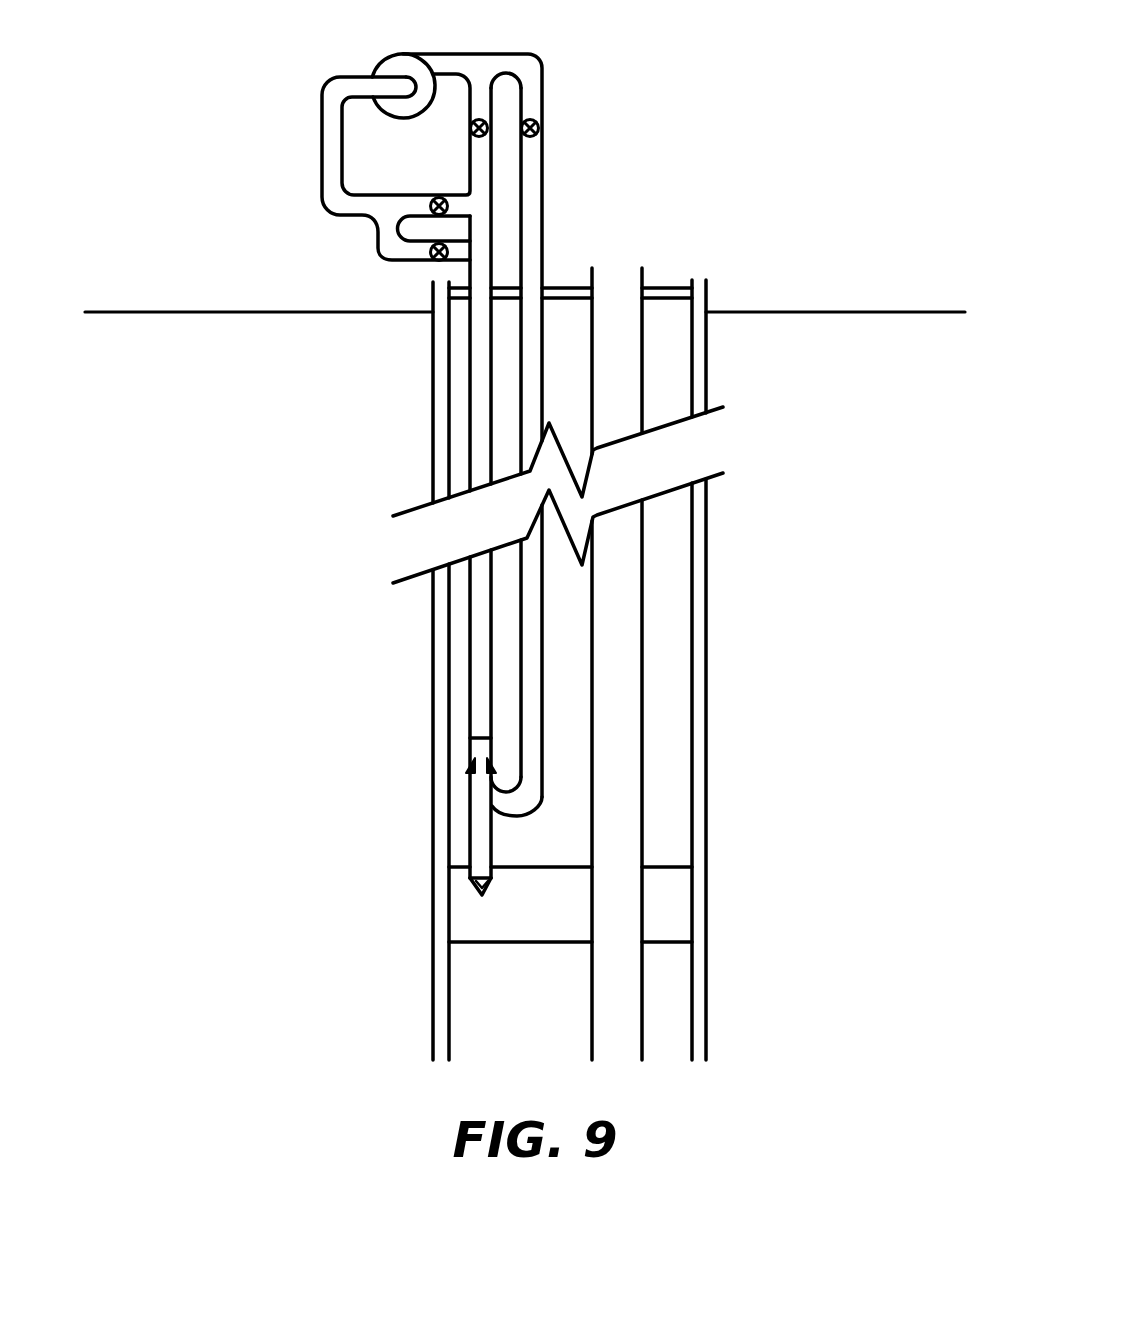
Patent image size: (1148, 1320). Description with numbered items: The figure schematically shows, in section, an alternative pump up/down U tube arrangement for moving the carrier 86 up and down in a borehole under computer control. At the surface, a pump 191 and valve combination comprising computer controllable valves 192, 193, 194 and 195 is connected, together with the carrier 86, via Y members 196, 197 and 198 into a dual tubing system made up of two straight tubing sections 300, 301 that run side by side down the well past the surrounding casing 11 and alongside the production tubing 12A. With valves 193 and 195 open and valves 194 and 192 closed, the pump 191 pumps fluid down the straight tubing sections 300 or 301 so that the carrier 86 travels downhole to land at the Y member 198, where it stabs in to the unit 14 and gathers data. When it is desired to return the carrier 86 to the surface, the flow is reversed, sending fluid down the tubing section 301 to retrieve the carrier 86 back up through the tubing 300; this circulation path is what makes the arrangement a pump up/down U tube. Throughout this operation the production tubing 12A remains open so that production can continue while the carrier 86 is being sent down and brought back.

The well casing 11 is at (707, 368).
The production tubing 12A is at (643, 545).
The unit 14 is at (685, 898).
The carrier 86 is at (478, 845).
The pump 191 is at (405, 54).
The computer controllable valve 192 is at (539, 128).
The computer controllable valve 193 is at (470, 128).
The computer controllable valve 194 is at (433, 197).
The computer controllable valve 195 is at (439, 260).
The Y member 196 is at (365, 226).
The Y member 197 is at (492, 54).
The Y member 198 is at (530, 798).
The straight tubing section 300 is at (470, 656).
The straight tubing section 301 is at (545, 632).